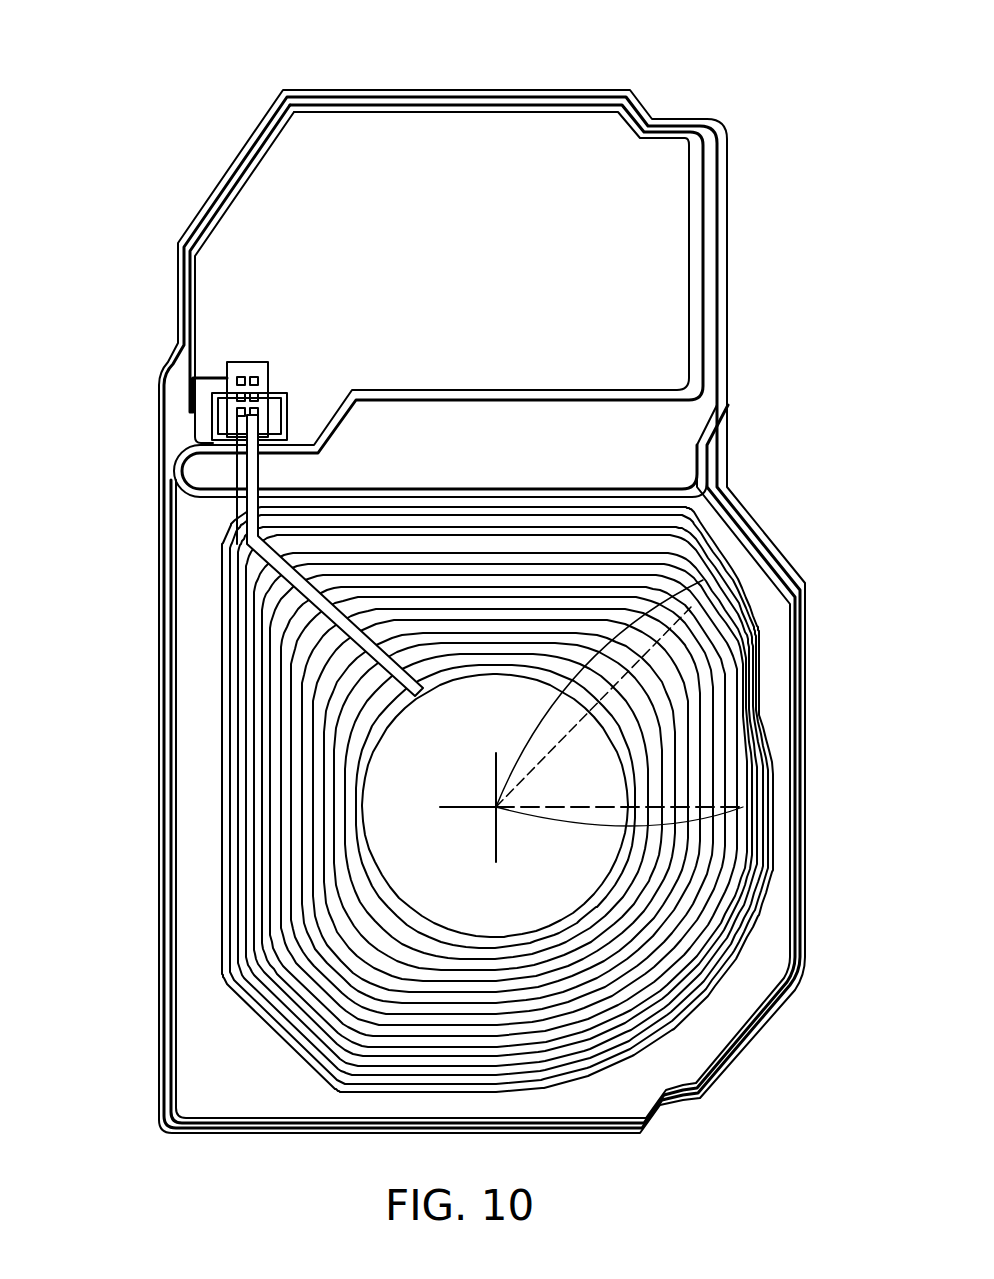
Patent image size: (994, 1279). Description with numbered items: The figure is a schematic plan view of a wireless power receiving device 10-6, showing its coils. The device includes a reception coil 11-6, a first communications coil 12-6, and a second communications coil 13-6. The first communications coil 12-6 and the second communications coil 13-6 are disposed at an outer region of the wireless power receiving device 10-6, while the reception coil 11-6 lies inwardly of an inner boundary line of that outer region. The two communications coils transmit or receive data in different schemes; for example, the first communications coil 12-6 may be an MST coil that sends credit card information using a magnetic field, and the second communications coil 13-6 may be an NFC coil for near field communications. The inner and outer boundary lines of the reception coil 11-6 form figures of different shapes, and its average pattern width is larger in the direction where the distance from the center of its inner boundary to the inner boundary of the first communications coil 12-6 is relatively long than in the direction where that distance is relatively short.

The wireless power receiving device 10-6 is at (492, 37).
The reception coil 11-6 is at (462, 753).
The first communications coil 12-6 is at (730, 562).
The second communications coil 13-6 is at (755, 520).